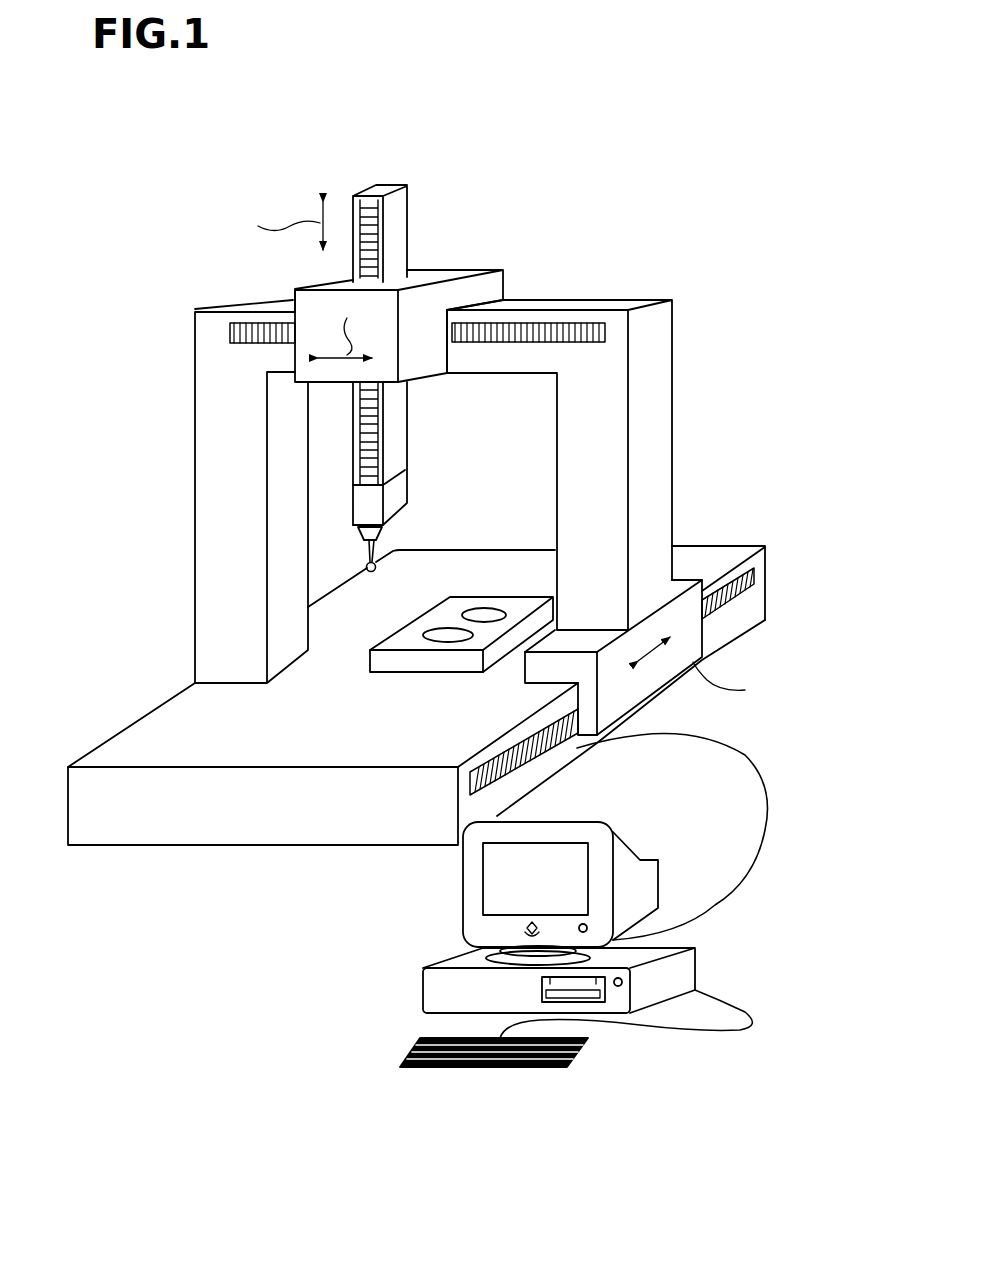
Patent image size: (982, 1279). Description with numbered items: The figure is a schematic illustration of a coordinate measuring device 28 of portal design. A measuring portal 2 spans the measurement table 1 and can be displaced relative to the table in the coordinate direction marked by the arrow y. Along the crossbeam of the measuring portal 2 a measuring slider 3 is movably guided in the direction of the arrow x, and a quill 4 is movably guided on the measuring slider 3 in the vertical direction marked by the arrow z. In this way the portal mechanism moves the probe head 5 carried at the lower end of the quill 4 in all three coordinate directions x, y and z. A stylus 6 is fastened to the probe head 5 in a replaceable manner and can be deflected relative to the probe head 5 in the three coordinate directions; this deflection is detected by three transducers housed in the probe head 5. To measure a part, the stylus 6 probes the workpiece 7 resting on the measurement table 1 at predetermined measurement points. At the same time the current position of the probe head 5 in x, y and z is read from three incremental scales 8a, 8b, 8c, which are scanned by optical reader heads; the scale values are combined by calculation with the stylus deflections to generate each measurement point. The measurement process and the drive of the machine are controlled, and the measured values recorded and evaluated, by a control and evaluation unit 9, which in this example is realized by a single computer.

The measurement table 1 is at (700, 553).
The measuring portal 2 is at (666, 437).
The measuring slider 3 is at (448, 272).
The quill 4 is at (397, 200).
The probe head 5 is at (400, 492).
The stylus 6 is at (389, 562).
The workpiece 7 is at (443, 658).
The incremental scale 8a is at (553, 332).
The incremental scale 8b is at (753, 570).
The incremental scale 8c is at (380, 440).
The control and evaluation unit 9 is at (425, 936).
The coordinate measuring device 28 is at (695, 280).